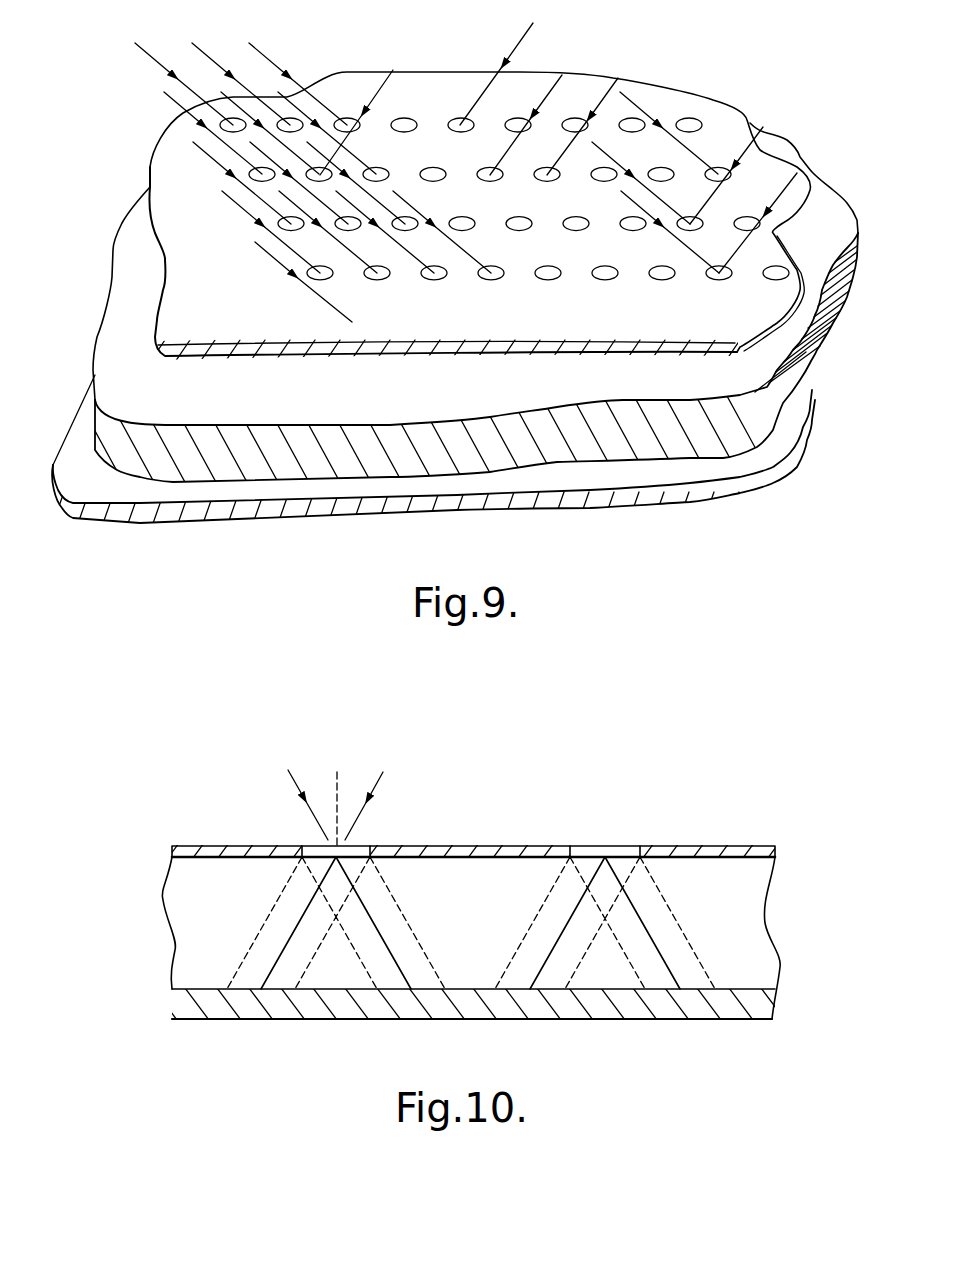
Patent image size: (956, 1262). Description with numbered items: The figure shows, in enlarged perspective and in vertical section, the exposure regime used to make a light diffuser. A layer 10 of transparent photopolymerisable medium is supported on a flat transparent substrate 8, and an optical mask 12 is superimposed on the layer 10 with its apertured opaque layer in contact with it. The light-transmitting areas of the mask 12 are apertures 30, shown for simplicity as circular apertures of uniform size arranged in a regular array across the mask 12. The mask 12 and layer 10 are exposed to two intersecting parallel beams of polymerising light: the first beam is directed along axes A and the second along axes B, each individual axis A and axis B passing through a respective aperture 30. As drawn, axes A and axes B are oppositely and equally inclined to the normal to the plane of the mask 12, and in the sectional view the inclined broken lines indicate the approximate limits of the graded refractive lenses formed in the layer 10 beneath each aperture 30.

In FIG. 9, the transparent substrate 8 is at (635, 473).
In FIG. 10, the transparent substrate 8 is at (655, 1017).
In FIG. 9, the photopolymerisable layer 10 is at (268, 413).
In FIG. 10, the photopolymerisable layer 10 is at (718, 878).
In FIG. 9, the optical mask 12 is at (168, 310).
In FIG. 10, the optical mask 12 is at (473, 845).
In FIG. 9, the apertures 30 is at (437, 280).
In FIG. 10, the apertures 30 is at (638, 852).
In FIG. 9, the axes A is at (203, 52).
In FIG. 10, the axes A is at (283, 762).
In FIG. 9, the axes B is at (518, 45).
In FIG. 10, the axes B is at (385, 776).